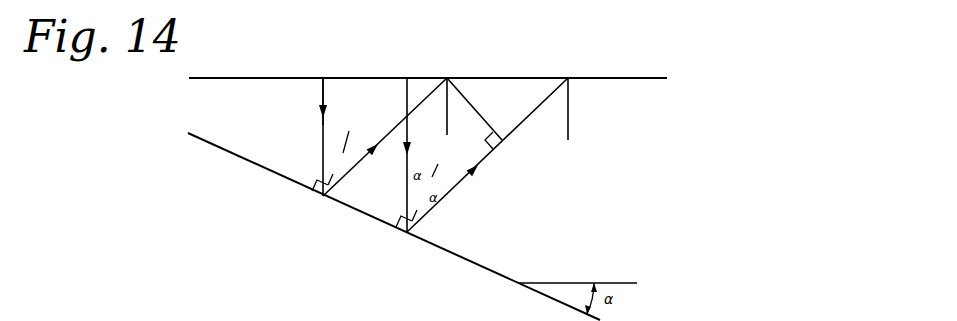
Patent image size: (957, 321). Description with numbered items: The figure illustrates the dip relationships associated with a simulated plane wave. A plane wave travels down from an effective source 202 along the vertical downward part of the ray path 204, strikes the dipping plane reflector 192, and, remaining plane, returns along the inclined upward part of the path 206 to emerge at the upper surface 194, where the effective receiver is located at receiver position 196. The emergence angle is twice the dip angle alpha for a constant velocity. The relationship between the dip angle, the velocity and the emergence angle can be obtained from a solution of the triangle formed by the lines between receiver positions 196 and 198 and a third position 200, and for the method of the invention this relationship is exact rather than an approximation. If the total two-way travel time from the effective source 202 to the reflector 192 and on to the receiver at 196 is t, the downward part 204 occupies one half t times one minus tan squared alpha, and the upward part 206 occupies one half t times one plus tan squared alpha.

The plane reflector 192 is at (218, 143).
The upper surface 194 is at (232, 78).
The receiver position 196 is at (447, 78).
The receiver position 198 is at (568, 78).
The third position 200 is at (504, 143).
The effective source 202 is at (323, 78).
The vertical downward part of the ray path 204 is at (321, 135).
The inclined upward part of the path 206 is at (366, 156).